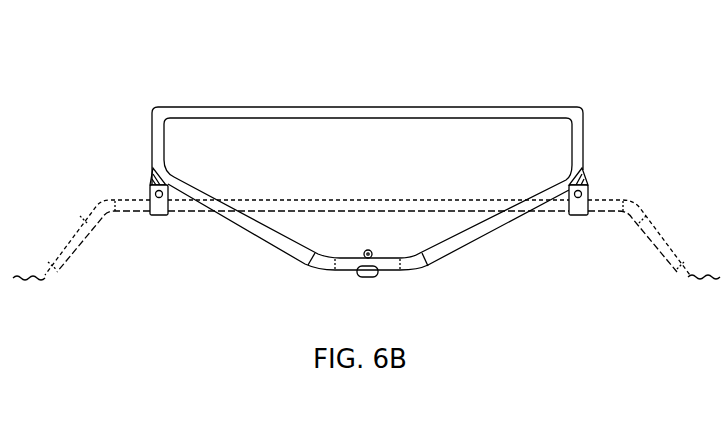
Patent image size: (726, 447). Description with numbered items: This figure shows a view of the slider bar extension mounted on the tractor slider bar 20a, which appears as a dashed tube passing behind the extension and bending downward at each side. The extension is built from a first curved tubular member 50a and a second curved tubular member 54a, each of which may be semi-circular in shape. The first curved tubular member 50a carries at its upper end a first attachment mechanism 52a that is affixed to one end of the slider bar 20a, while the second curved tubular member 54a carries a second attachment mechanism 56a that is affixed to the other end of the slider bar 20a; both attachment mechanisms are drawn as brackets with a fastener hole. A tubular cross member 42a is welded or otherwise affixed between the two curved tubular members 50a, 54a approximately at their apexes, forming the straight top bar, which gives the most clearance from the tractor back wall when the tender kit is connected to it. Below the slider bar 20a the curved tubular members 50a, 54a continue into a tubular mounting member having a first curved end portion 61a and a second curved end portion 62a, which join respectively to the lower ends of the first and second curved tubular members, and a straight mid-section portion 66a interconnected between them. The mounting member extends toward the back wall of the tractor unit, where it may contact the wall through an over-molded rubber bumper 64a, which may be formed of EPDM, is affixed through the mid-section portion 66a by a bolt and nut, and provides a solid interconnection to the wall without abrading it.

The slider bar 20a is at (642, 229).
The tubular cross member 42a is at (310, 118).
The first curved tubular member 50a is at (152, 122).
The first attachment mechanism 52a is at (153, 216).
The second curved tubular member 54a is at (585, 122).
The second attachment mechanism 56a is at (570, 105).
The first curved end portion 61a is at (260, 238).
The second curved end portion 62a is at (475, 238).
The over-molded rubber bumper 64a is at (378, 278).
The straight mid-section portion 66a is at (349, 254).